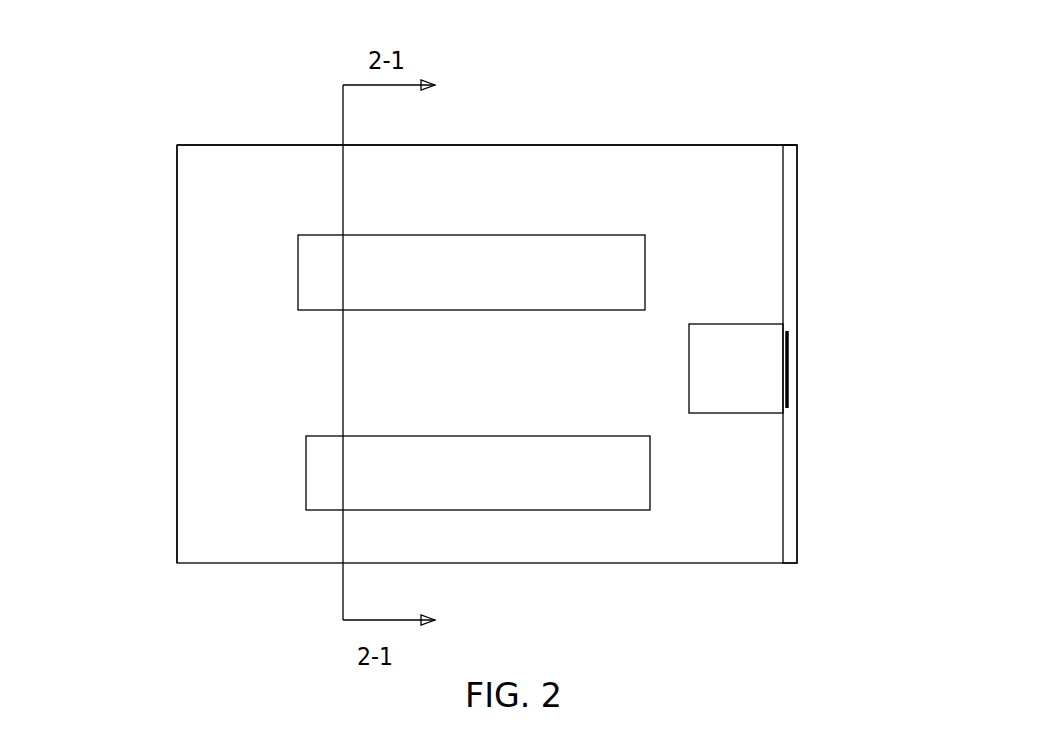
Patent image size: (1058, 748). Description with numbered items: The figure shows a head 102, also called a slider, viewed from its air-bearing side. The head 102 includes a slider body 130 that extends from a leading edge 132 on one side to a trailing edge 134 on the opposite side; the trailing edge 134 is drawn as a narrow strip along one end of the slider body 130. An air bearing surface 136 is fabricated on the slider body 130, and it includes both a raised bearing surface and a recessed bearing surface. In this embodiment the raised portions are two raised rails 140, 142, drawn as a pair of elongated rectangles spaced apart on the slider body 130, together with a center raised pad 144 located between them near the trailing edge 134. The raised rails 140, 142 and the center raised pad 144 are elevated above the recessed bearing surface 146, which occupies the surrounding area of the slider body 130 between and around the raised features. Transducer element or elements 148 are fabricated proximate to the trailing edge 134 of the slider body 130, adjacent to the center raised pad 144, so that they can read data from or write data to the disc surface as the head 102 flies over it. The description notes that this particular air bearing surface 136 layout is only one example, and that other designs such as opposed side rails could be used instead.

The head 102 is at (630, 115).
The slider body 130 is at (722, 145).
The leading edge 132 is at (185, 351).
The trailing edge 134 is at (797, 428).
The air bearing surface 136 is at (510, 220).
The raised rail 140 is at (552, 250).
The raised rail 142 is at (565, 446).
The center raised pad 144 is at (752, 324).
The recessed bearing surface 146 is at (500, 383).
The transducer element 148 is at (790, 368).